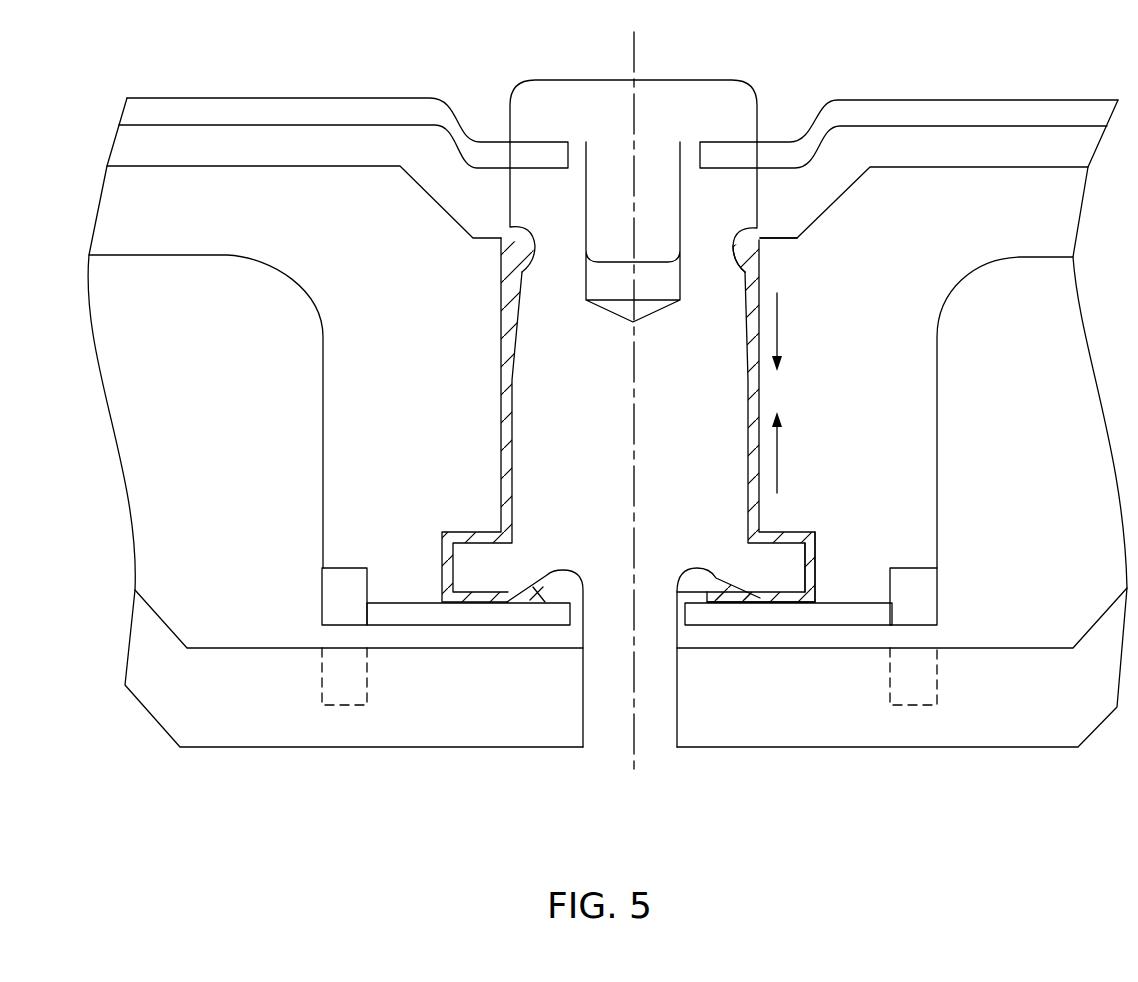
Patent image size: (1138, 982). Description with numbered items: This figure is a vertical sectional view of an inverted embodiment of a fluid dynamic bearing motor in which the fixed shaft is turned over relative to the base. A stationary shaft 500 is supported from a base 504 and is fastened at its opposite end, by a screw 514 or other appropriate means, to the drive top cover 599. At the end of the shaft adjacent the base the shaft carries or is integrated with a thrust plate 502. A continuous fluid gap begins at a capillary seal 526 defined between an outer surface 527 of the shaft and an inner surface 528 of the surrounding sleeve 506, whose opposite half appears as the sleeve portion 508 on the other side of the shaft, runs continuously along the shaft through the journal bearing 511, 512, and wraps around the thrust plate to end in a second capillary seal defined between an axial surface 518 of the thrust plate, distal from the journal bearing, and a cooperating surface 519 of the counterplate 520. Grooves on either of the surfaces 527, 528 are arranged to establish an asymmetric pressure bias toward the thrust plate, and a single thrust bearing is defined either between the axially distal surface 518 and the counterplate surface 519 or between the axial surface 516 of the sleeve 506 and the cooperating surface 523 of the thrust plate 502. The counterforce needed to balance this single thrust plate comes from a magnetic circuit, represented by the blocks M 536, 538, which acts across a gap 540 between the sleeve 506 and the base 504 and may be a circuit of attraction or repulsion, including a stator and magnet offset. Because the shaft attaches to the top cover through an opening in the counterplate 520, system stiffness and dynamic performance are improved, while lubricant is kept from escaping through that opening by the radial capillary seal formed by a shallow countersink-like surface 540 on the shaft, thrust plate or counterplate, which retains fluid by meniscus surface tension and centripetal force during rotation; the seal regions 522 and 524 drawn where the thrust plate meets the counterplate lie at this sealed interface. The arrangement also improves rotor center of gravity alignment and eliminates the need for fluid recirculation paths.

The stationary shaft 500 is at (566, 208).
The drive top cover 599 is at (233, 104).
The fastener 514 is at (684, 97).
The sleeve 506 is at (459, 418).
The second housing 508 is at (1056, 233).
The base 504 is at (268, 720).
The capillary seal 526 is at (785, 238).
The inner surface of the sleeve 528 is at (765, 285).
The outer surface of the shaft 527 is at (748, 290).
The thrust plate 502 is at (477, 562).
The axial surface of the sleeve 516 is at (780, 530).
The cooperating surface of the thrust plate 523 is at (793, 558).
The cooperating surface of counterplate 519 is at (772, 603).
The seal bead 524 is at (678, 580).
The gap 540 is at (538, 578).
The seal contact 522 is at (548, 574).
The axial surface of the thrust plate 518 is at (468, 596).
The counterplate 520 is at (847, 615).
The magnetic circuit block 536 is at (923, 581).
The magnetic circuit block 538 is at (933, 681).
The journal bearing 511 is at (779, 338).
The journal bearing 512 is at (778, 447).